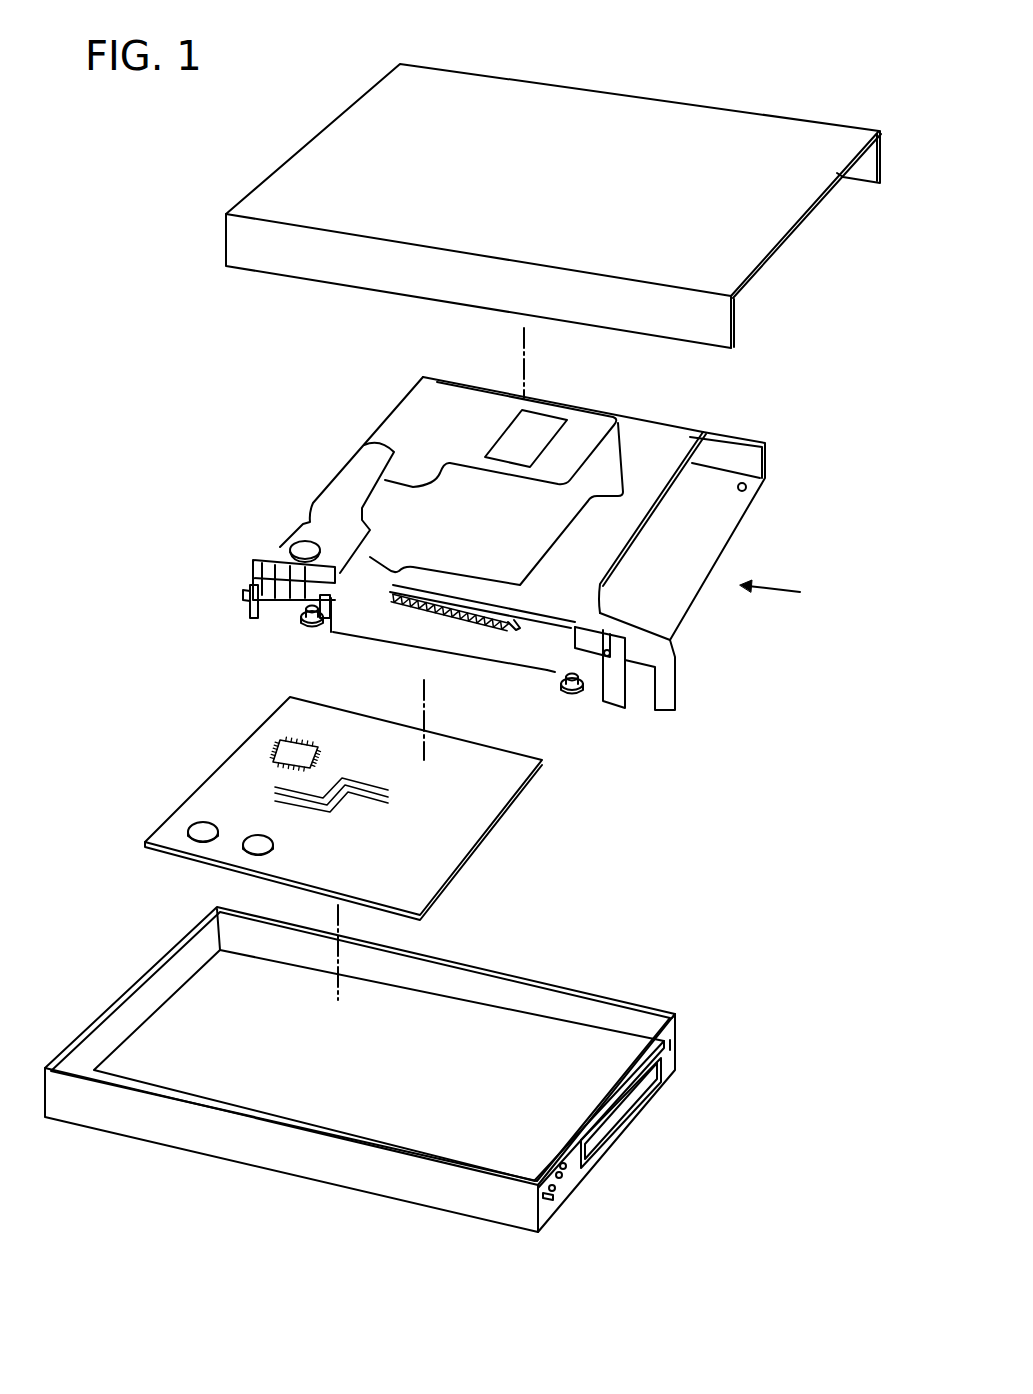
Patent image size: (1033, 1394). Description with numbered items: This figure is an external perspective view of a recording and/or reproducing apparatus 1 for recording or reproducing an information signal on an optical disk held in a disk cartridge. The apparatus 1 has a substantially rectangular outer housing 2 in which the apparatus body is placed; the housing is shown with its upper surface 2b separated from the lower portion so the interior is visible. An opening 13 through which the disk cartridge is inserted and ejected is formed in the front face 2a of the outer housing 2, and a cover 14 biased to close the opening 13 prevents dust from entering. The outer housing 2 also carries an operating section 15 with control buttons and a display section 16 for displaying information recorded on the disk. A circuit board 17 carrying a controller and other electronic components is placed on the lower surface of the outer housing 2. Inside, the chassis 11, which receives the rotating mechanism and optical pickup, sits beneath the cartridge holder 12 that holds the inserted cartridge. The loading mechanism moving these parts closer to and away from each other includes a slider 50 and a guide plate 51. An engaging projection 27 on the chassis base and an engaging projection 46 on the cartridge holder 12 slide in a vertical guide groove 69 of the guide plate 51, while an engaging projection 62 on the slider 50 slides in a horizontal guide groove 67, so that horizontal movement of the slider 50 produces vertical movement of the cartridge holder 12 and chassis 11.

The recording and/or reproducing apparatus 1 is at (662, 84).
The outer housing 2 is at (297, 268).
The front face 2a is at (668, 1019).
The upper surface 2b is at (792, 148).
The chassis 11 is at (730, 512).
The cartridge holder 12 is at (427, 515).
The opening 13 is at (659, 1048).
The cover 14 is at (661, 1055).
The operating section 15 is at (560, 1185).
The display section 16 is at (636, 1099).
The circuit board 17 is at (467, 833).
The engaging projection 27 is at (268, 613).
The engaging projection 46 is at (283, 577).
The slider 50 is at (688, 441).
The guide plate 51 is at (503, 660).
The engaging projection 62 is at (327, 617).
The horizontal guide groove 67 is at (560, 688).
The vertical guide groove 69 is at (282, 610).